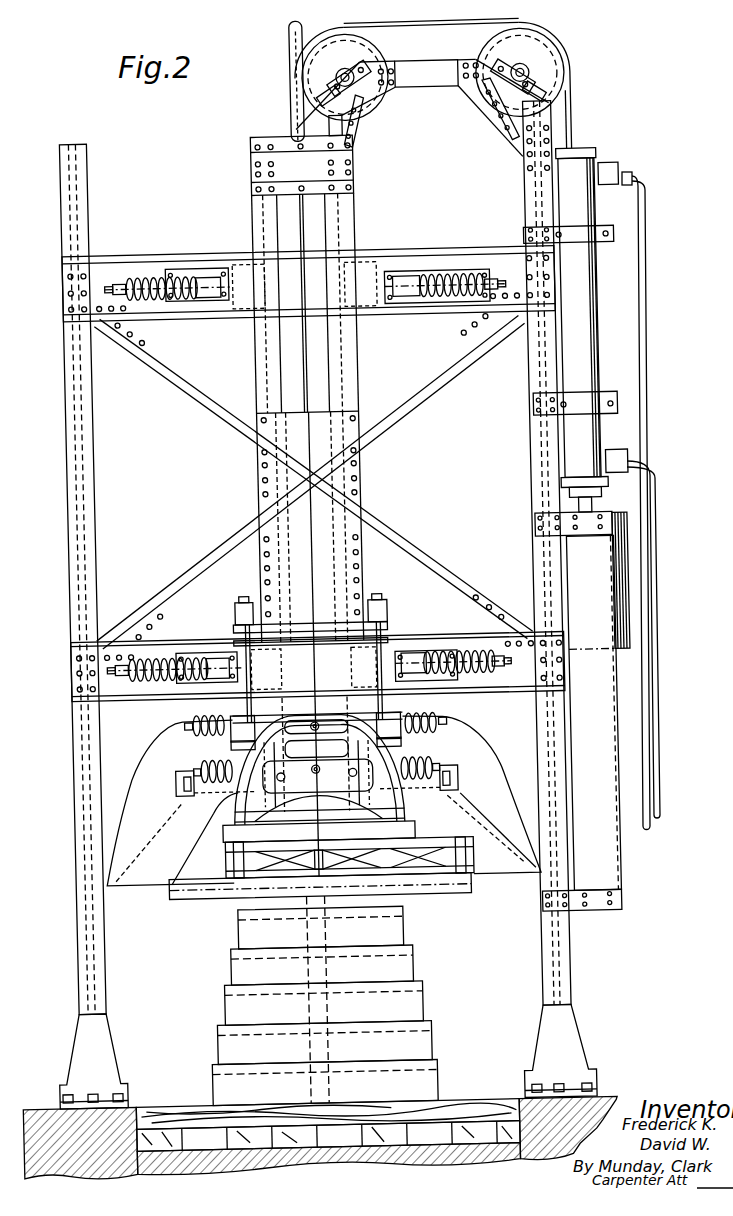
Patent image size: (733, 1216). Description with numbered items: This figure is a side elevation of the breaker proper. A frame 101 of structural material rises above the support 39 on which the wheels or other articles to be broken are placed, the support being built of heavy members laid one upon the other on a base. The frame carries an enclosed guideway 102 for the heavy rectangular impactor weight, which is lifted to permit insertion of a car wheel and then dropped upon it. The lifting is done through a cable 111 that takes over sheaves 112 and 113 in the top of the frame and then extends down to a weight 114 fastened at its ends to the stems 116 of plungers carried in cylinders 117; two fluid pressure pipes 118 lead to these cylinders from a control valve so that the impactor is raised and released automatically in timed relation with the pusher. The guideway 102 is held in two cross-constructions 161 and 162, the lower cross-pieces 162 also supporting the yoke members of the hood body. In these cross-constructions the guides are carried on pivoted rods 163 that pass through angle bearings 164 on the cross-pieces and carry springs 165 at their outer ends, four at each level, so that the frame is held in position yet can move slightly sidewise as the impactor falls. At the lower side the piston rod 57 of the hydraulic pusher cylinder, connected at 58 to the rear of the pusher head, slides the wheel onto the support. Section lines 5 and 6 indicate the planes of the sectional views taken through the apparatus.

The frame 101 is at (567, 953).
The guideway 102 is at (362, 466).
The cable 111 is at (462, 22).
The sheave 112 is at (355, 45).
The sheave 113 is at (547, 43).
The weight 114 is at (623, 597).
The stem 116 is at (597, 511).
The cylinder 117 is at (593, 332).
The fluid pressure pipe 118 is at (659, 687).
The cross-construction 161 is at (356, 257).
The cross-construction 162 is at (505, 680).
The pivoted rod 163 is at (470, 290).
The angle bearing 164 is at (415, 660).
The spring 165 is at (468, 652).
The support 39 is at (425, 994).
The piston rod 57 is at (433, 1073).
The connection 58 is at (320, 1138).
The section line 5- 5 is at (75, 292).
The section line 6- 6 is at (298, 75).